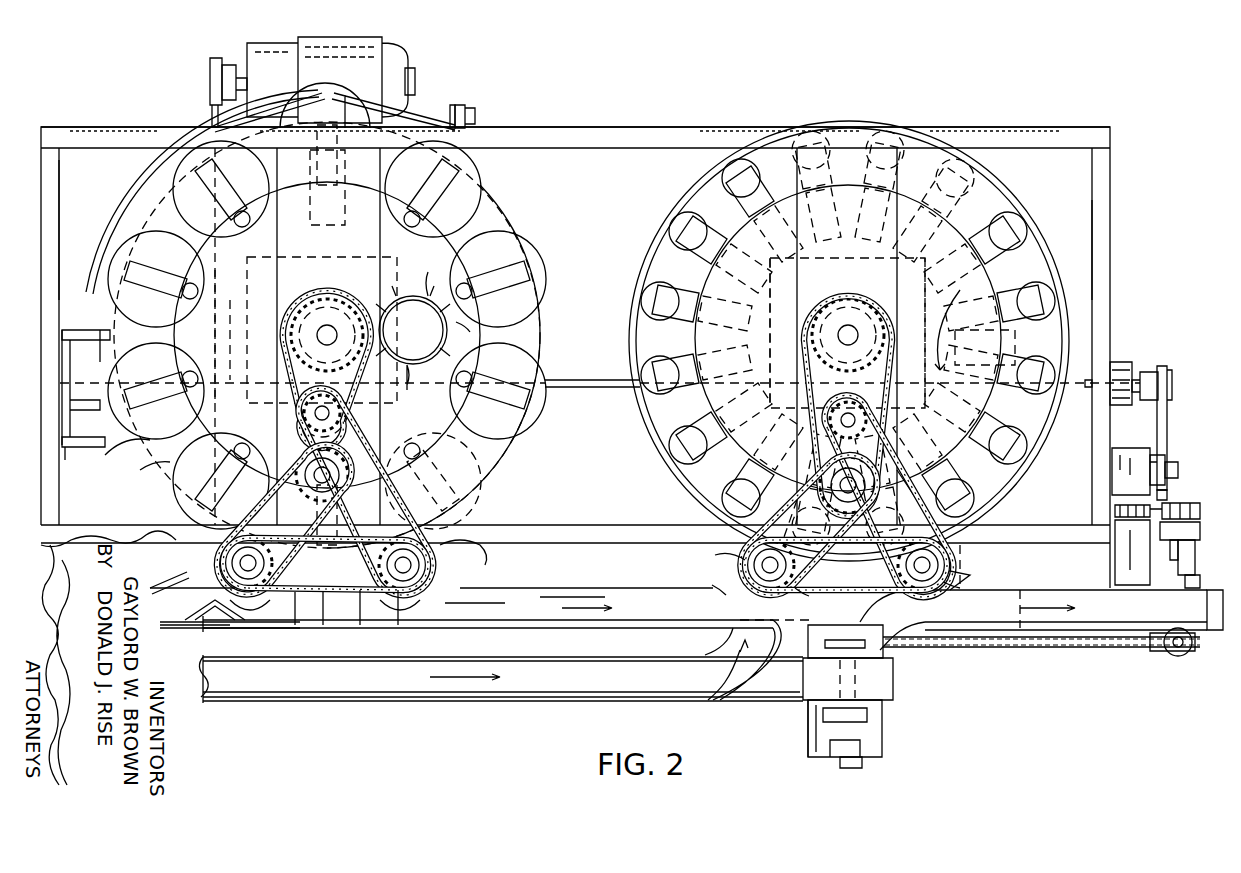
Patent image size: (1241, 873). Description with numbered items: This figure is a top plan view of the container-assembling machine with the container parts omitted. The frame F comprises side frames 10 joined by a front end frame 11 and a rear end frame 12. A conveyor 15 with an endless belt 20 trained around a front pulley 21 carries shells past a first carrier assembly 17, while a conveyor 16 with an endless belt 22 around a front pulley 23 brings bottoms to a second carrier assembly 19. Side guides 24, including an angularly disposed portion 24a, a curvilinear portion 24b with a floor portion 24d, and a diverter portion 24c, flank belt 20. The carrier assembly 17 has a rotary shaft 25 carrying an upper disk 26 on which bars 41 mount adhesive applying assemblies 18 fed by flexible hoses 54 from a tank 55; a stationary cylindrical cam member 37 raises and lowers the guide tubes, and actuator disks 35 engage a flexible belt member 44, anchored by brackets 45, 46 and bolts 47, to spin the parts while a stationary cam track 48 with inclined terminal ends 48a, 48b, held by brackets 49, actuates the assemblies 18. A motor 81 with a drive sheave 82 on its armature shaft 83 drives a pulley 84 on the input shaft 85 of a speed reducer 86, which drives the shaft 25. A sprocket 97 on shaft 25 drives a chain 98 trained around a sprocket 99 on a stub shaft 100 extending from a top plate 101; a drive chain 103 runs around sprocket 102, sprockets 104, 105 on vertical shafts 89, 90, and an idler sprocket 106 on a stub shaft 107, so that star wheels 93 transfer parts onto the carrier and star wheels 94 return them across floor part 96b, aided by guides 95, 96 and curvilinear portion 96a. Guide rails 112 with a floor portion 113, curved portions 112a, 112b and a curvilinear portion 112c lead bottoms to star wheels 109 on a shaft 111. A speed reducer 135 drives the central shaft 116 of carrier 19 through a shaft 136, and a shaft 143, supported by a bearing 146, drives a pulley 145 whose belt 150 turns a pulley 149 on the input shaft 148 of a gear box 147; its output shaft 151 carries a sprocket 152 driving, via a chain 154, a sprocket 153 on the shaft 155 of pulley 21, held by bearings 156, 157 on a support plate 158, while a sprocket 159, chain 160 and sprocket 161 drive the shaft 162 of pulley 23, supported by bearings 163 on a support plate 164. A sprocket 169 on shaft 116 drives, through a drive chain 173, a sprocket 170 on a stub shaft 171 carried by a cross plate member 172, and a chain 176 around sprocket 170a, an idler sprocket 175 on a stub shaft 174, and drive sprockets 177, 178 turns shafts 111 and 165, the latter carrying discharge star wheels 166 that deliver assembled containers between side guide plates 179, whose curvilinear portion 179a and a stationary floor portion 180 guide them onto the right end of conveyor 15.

The frame F is at (673, 124).
The side frames 10 is at (628, 148).
The front end frame 11 is at (59, 190).
The rear end frame 12 is at (1110, 240).
The conveyor 15 is at (566, 582).
The conveyor 16 is at (513, 698).
The carrier assembly 17 is at (524, 197).
The adhesive applying assemblies 18 is at (200, 256).
The second carrier assembly 19 is at (1046, 209).
The endless belt 20 is at (532, 587).
The front pulley 21 is at (1212, 638).
The endless belt 22 is at (369, 700).
The front pulley 23 is at (893, 700).
The side guides 24 is at (158, 552).
The angularly disposed portion 24a is at (170, 578).
The curvilinear portion 24b is at (323, 628).
The diverter portion 24c is at (175, 628).
The floor portion 24d is at (295, 628).
The rotary shaft 25 is at (340, 300).
The upper disk 26 is at (444, 252).
The actuator disk 35 is at (136, 450).
The stationary cylindrical cam member 37 is at (150, 470).
The bar 41 is at (496, 260).
The flexible belt member 44 is at (134, 196).
The bracket 45 is at (66, 410).
The bracket 46 is at (456, 105).
The bolts 47 is at (472, 108).
The stationary cam track 48 is at (90, 362).
The inclined terminal end 48a is at (73, 436).
The inclined terminal end 48b is at (335, 100).
The brackets 49 is at (72, 330).
The flexible hose 54 is at (433, 296).
The tank 55 is at (425, 339).
The motor 81 is at (400, 52).
The drive sheave 82 is at (229, 64).
The armature shaft 83 is at (204, 64).
The sheave or pulley 84 is at (256, 342).
The input shaft 85 is at (178, 400).
The speed reducer 86 is at (336, 258).
The shaft 89 is at (222, 563).
The shaft 90 is at (430, 568).
The star wheels 93 is at (255, 626).
The star wheels 94 is at (435, 628).
The guide 95 is at (600, 587).
The guide 96 is at (632, 657).
The curvilinear portion 96a is at (360, 628).
The floor part 96b is at (398, 628).
The sprocket 97 is at (300, 298).
The chain 98 is at (285, 385).
The sprocket 99 is at (305, 472).
The vertical stub shaft 100 is at (402, 444).
The top plate 101 is at (420, 194).
The sprocket 102 is at (274, 480).
The drive chain 103 is at (332, 590).
The sprocket 104 is at (202, 610).
The sprocket 105 is at (458, 559).
The idler sprocket 106 is at (327, 404).
The stub shaft 107 is at (300, 430).
The star wheels 109 is at (716, 560).
The shaft 111 is at (746, 566).
The guide rails 112 is at (543, 630).
The curved portion 112a is at (715, 690).
The curved portion 112b is at (767, 648).
The curvilinear portion 112c is at (792, 620).
The floor portion 113 is at (870, 566).
The central shaft 116 is at (840, 300).
The speed reducer 135 is at (920, 330).
The shaft 136 is at (602, 388).
The shaft 143 is at (1080, 390).
The pulley 145 is at (1166, 372).
The bearing 146 is at (1124, 362).
The gear box 147 is at (1112, 470).
The input shaft 148 is at (1172, 462).
The pulley 149 is at (1172, 445).
The belt 150 is at (1168, 410).
The output shaft 151 is at (1115, 508).
The sprocket 152 is at (1150, 552).
The sprocket 153 is at (1178, 472).
The chain 154 is at (1191, 506).
The shaft 155 is at (1187, 544).
The bearing 156 is at (1189, 576).
The bearing 157 is at (1192, 523).
The support plate 158 is at (1181, 556).
The sprocket 159 is at (1162, 646).
The chain 160 is at (1108, 646).
The sprocket 161 is at (816, 636).
The shaft 162 is at (880, 735).
The bearings 163 is at (860, 757).
The support plate 164 is at (808, 740).
The star wheel shaft 165 is at (966, 574).
The discharge star wheels 166 is at (961, 605).
The sprocket 169 is at (862, 300).
The sprocket 170 is at (763, 388).
The sprocket 170a is at (798, 499).
The stub shaft 171 is at (830, 485).
The cross plate member 172 is at (862, 128).
The drive chain 173 is at (923, 360).
The stub shaft 174 is at (850, 404).
The idler sprocket 175 is at (912, 392).
The chain 176 is at (930, 455).
The drive sprocket 177 is at (730, 590).
The drive sprocket 178 is at (952, 580).
The side guide plates 179 is at (1030, 590).
The curvilinear portion 179a is at (900, 645).
The stationary floor portion 180 is at (810, 590).